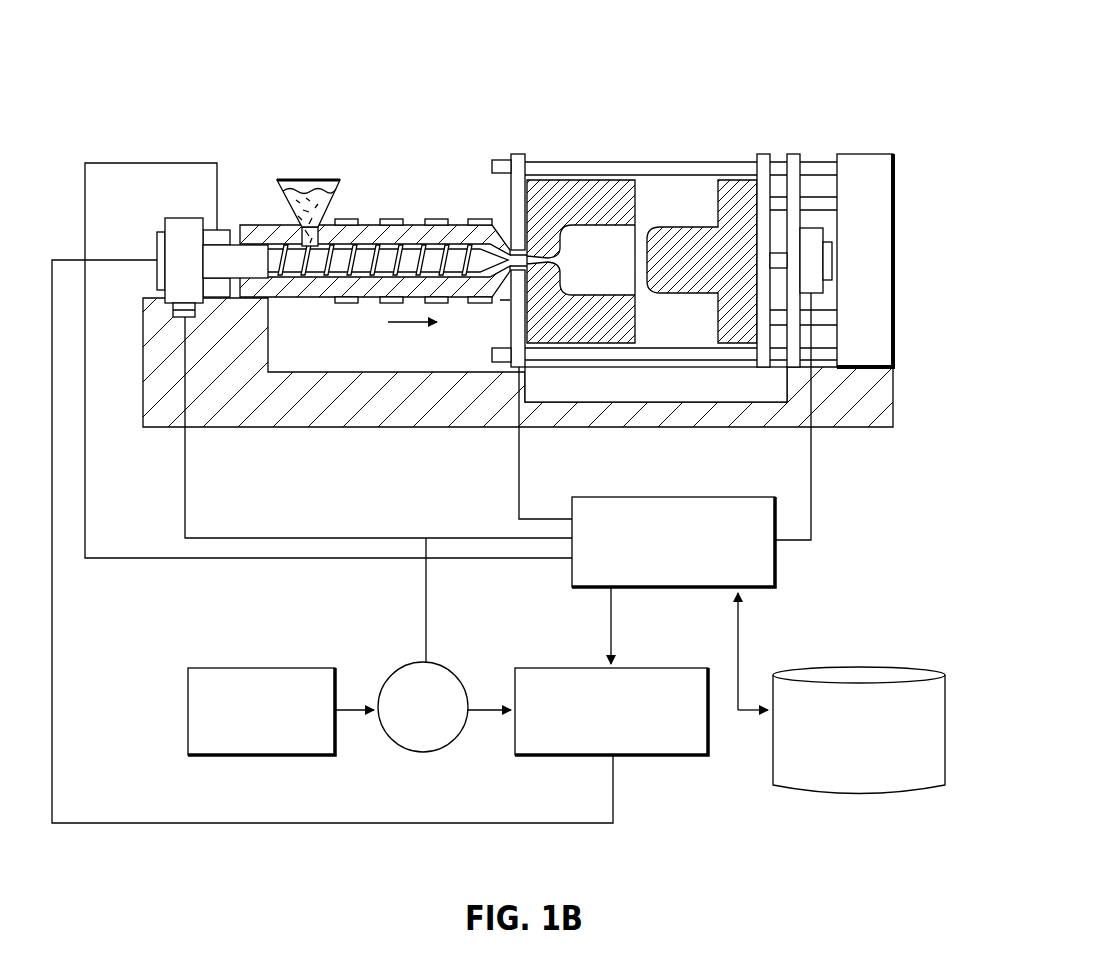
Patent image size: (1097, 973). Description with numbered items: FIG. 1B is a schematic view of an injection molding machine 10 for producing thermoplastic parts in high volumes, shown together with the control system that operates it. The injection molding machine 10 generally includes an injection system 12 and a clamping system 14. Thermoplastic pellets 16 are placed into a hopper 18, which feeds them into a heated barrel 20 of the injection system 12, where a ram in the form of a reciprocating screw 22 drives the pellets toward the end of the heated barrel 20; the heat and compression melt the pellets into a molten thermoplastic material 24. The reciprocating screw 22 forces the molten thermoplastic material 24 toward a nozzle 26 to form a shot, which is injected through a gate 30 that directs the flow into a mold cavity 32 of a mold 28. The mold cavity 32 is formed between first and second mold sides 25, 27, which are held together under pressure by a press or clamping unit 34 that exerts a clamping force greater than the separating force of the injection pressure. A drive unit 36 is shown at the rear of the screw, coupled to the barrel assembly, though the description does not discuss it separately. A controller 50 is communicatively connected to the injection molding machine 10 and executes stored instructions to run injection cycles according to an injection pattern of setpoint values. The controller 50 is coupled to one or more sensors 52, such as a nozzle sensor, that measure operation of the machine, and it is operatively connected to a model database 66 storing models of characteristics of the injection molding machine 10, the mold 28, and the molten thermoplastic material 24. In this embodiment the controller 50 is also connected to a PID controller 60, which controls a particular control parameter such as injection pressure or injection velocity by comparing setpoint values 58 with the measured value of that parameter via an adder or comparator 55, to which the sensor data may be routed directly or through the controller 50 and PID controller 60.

The injection molding machine 10 is at (412, 58).
The injection system 12 is at (353, 323).
The clamping system 14 is at (852, 470).
The thermoplastic pellets 16 is at (300, 188).
The hopper 18 is at (325, 178).
The heated barrel 20 is at (417, 217).
The reciprocating screw 22 is at (318, 273).
The molten thermoplastic material 24 is at (460, 240).
The first mold side 25 is at (580, 328).
The nozzle 26 is at (538, 200).
The second mold side 27 is at (688, 284).
The mold 28 is at (637, 172).
The gate 30 is at (557, 250).
The mold cavity 32 is at (600, 238).
The clamping unit 34 is at (841, 148).
The screw drive motor 36 is at (182, 217).
The controller 50 is at (726, 497).
The sensors 52 is at (172, 310).
The comparator 55 is at (455, 676).
The setpoint values 58 is at (268, 668).
The PID controller 60 is at (660, 668).
The model database 66 is at (886, 668).